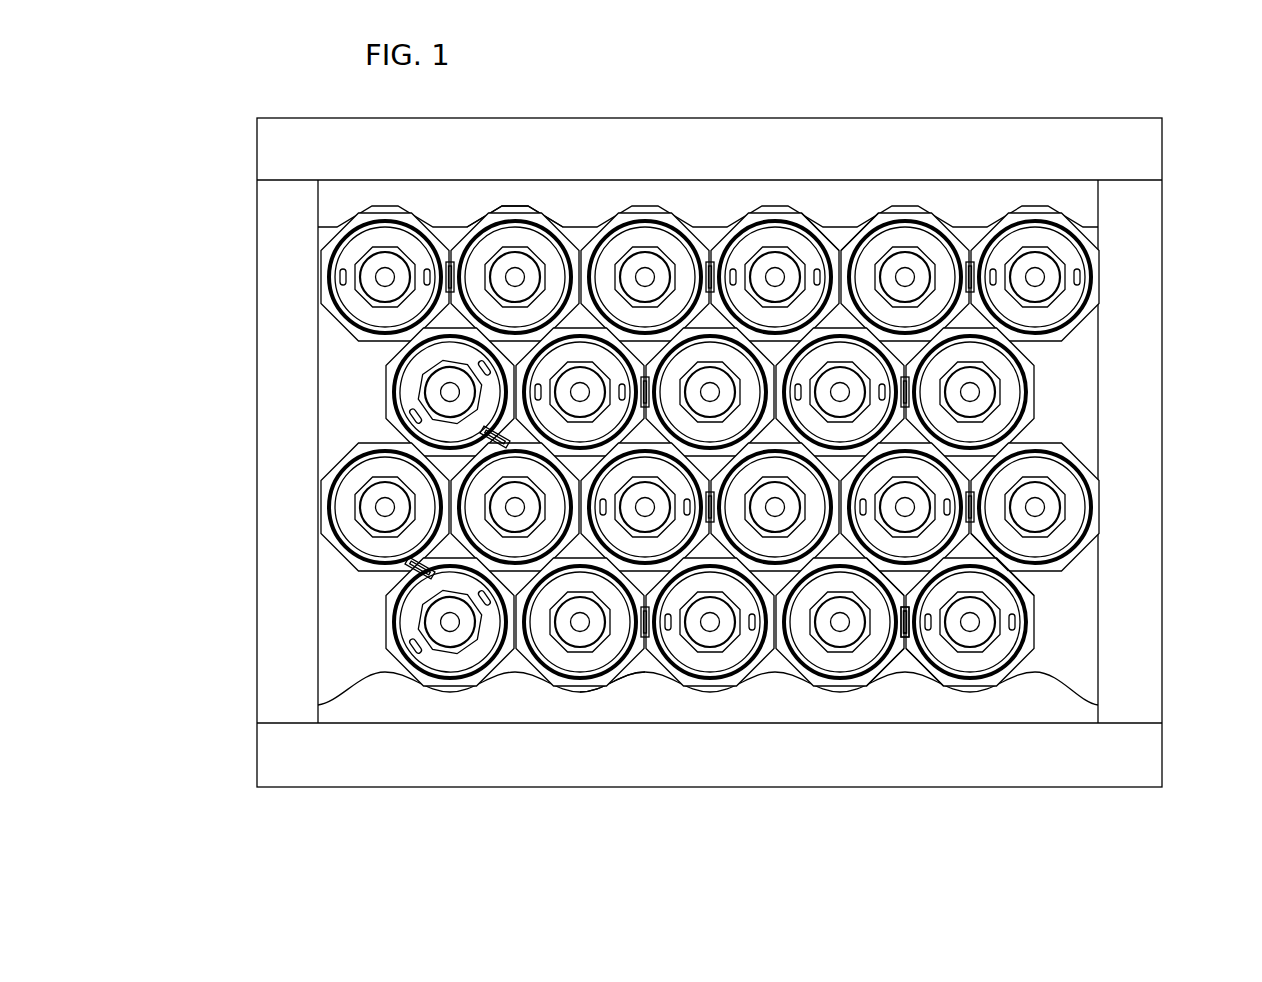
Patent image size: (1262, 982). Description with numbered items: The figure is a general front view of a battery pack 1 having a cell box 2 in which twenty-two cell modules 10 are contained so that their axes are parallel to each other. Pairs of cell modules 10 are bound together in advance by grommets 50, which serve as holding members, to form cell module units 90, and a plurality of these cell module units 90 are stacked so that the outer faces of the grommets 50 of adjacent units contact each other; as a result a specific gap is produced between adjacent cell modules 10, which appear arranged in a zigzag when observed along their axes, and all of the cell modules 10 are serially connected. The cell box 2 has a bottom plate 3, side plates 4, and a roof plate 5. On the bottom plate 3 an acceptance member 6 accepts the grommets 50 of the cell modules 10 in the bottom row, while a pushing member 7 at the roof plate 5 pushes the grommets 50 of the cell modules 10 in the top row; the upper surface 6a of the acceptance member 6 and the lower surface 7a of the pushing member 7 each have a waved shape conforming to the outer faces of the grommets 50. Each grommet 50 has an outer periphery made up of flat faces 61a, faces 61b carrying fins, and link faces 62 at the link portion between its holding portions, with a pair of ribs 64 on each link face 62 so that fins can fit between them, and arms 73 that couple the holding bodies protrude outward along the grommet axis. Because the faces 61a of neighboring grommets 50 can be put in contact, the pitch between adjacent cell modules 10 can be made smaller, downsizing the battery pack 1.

The battery pack 1 is at (773, 100).
The cell box 2 is at (1158, 293).
The bottom plate 3 is at (657, 790).
The side plates 4 is at (258, 357).
The roof plate 5 is at (640, 118).
The acceptance member 6 is at (517, 707).
The upper surface of the acceptance member 6a is at (592, 690).
The pushing member 7 is at (570, 195).
The lower surface of the pushing member 7a is at (513, 222).
The cell module 10 is at (922, 227).
The grommet 50 is at (745, 225).
The face 61a is at (810, 245).
The face 61b is at (893, 605).
The link face 62 is at (906, 672).
The ribs 64 is at (930, 640).
The arms 73 is at (890, 672).
The cell module unit 90 is at (705, 225).